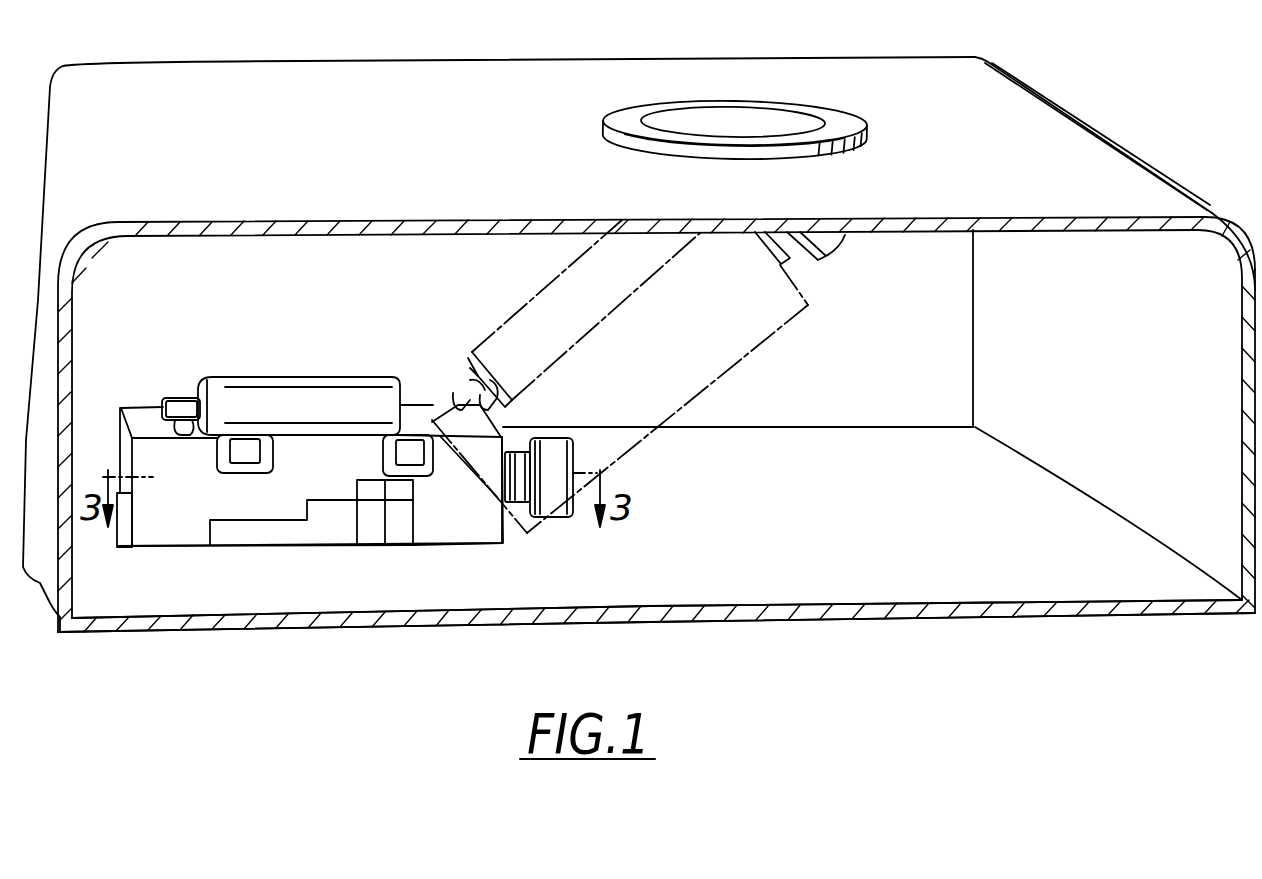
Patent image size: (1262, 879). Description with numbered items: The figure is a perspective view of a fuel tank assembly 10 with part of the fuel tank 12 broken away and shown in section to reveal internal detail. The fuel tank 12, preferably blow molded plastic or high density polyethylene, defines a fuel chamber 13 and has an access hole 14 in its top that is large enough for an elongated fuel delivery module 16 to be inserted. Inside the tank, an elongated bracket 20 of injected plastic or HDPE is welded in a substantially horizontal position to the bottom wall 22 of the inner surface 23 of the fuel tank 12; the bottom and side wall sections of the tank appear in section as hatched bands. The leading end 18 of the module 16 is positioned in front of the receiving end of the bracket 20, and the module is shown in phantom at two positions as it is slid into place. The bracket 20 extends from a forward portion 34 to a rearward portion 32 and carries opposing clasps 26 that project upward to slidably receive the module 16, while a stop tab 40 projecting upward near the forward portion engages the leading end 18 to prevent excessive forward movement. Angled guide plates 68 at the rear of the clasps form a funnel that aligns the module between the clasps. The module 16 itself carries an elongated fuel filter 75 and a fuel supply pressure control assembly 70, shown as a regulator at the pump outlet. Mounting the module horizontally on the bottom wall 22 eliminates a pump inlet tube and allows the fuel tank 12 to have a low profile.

The fuel tank assembly 10 is at (1070, 43).
The fuel tank 12 is at (1090, 133).
The fuel chamber 13 is at (1155, 270).
The access hole 14 is at (753, 113).
The fuel delivery module 16 is at (420, 367).
The leading end 18 is at (120, 452).
The elongated bracket 20 is at (290, 545).
The bottom wall 22 is at (785, 627).
The inner surface 23 is at (915, 227).
The clasps 26 is at (330, 525).
The rearward portion 32 is at (485, 545).
The forward portion 34 is at (160, 548).
The stop tab 40 is at (120, 525).
The guide plate 68 is at (407, 515).
The fuel supply pressure control assembly 70 is at (555, 440).
The fuel filter 75 is at (328, 382).